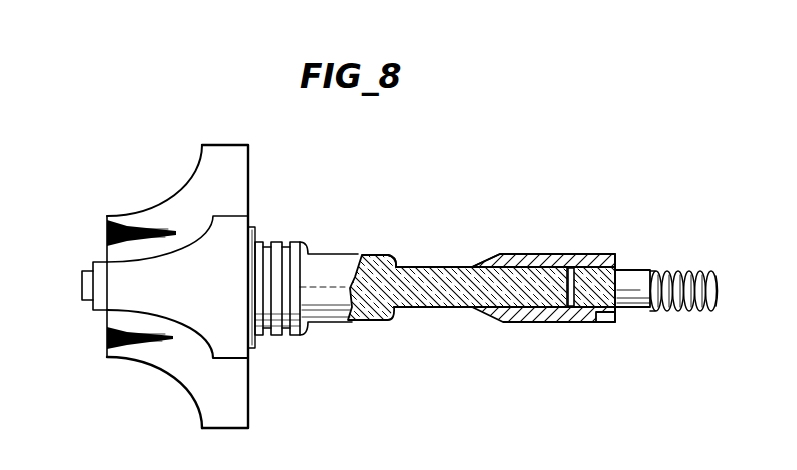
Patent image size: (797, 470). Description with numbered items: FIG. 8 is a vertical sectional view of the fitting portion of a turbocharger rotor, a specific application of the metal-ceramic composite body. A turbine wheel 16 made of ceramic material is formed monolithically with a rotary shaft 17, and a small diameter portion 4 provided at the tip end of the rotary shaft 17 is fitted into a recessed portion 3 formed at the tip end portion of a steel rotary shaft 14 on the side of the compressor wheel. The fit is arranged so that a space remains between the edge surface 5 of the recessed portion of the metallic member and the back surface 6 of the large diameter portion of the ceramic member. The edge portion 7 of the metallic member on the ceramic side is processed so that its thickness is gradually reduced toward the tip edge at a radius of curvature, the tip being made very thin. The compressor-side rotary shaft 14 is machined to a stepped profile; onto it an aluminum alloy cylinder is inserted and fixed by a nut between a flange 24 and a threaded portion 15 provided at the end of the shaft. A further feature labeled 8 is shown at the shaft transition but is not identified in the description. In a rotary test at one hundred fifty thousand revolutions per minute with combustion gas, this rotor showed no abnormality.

The recessed portion 3 is at (571, 269).
The small diameter portion 4 is at (455, 300).
The edge surface of the recessed portion 5 is at (477, 266).
The back surface of the large diameter portion 6 is at (391, 256).
The edge portion of the metallic member 7 is at (497, 254).
The shaft step 8 is at (397, 260).
The steel rotary shaft 14 is at (633, 310).
The threaded portion 15 is at (685, 270).
The turbine wheel 16 is at (233, 392).
The rotary shaft 17 is at (316, 265).
The flange 24 is at (618, 262).